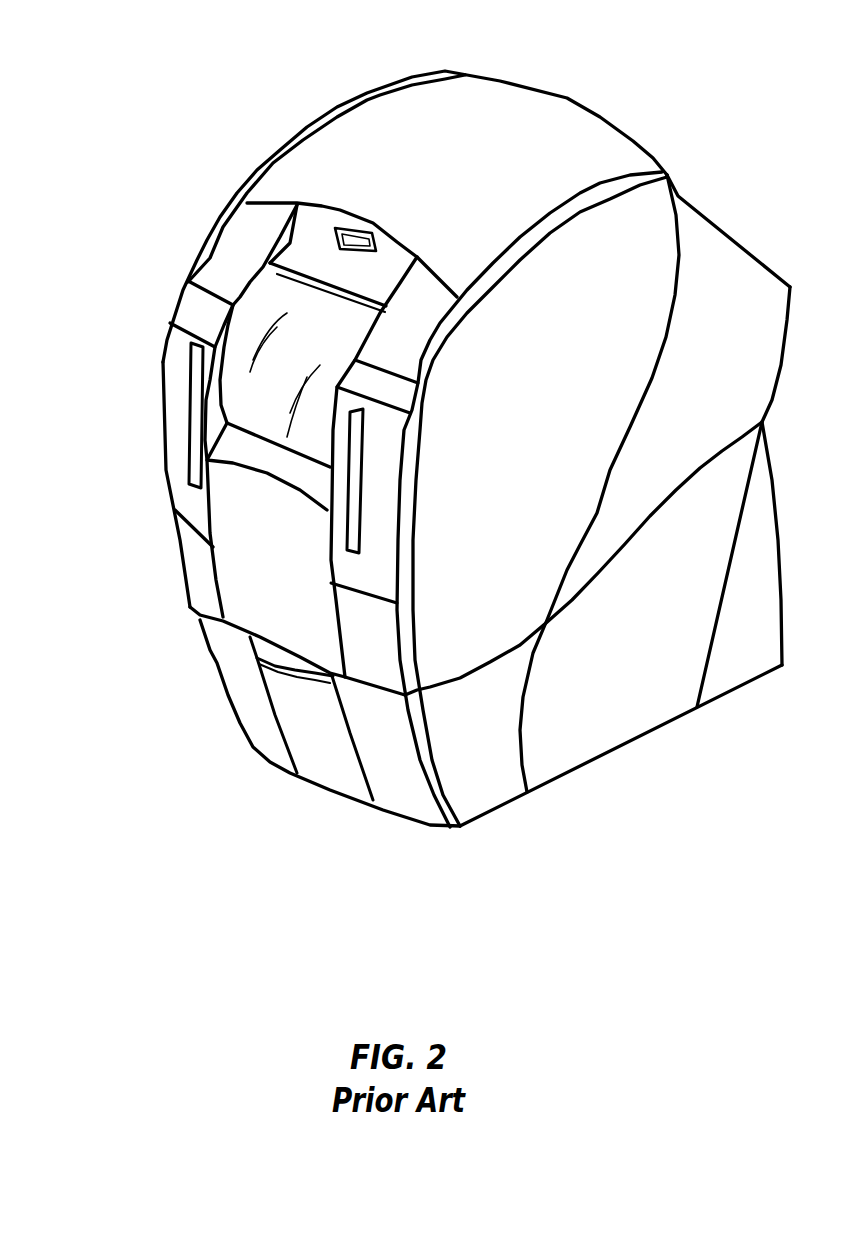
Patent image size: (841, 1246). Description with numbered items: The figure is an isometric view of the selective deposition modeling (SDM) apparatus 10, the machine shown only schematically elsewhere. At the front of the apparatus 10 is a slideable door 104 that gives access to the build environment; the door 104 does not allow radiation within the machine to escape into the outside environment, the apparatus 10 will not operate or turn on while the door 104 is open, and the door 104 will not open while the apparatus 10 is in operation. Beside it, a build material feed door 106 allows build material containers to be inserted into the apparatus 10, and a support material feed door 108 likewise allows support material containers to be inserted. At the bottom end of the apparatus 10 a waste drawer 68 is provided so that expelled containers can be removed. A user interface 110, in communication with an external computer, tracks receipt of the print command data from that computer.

The SDM apparatus 10 is at (188, 118).
The user interface 110 is at (337, 236).
The slideable door 104 is at (260, 382).
The build material feed door 106 is at (175, 445).
The support material feed door 108 is at (363, 570).
The waste drawer 68 is at (313, 735).